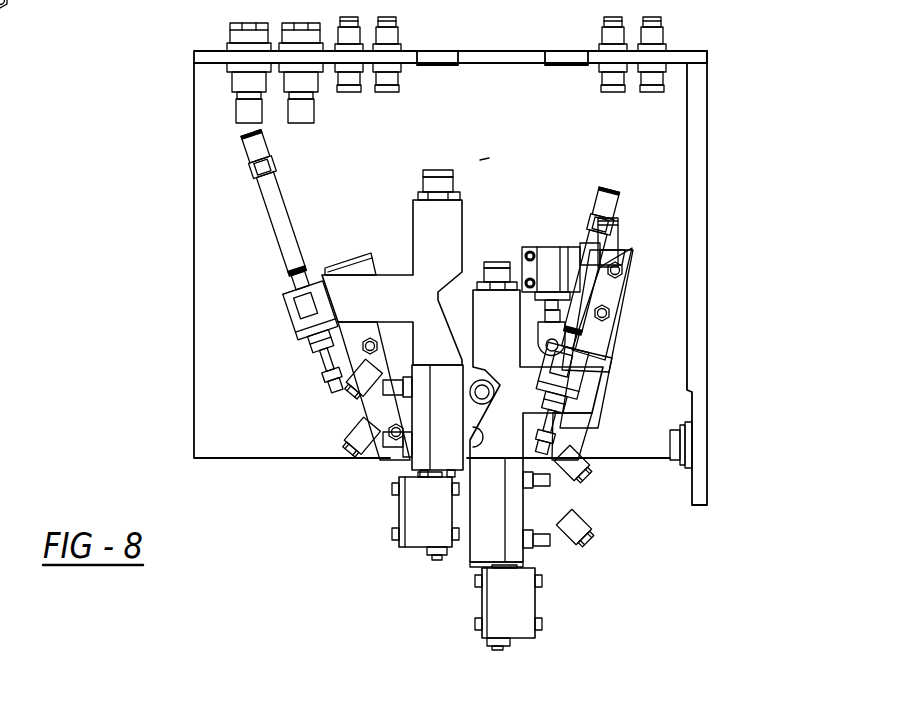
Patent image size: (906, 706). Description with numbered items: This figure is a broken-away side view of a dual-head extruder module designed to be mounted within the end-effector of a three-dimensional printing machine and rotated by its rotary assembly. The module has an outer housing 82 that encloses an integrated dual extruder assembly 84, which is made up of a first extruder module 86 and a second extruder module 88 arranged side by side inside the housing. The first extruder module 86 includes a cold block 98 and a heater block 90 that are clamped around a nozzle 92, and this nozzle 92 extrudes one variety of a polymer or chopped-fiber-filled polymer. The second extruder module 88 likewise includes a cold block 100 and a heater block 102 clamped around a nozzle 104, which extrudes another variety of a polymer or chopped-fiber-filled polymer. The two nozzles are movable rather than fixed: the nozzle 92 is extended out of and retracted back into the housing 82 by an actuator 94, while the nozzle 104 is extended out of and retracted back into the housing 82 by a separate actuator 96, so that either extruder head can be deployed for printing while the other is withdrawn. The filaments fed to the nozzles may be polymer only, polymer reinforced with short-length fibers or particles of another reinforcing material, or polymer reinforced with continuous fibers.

The outer housing 82 is at (193, 176).
The integrated dual extruder assembly 84 is at (489, 158).
The first extruder module 86 is at (262, 321).
The second extruder module 88 is at (678, 303).
The heater block 90 is at (422, 507).
The nozzle 92 is at (440, 555).
The actuator 94 is at (278, 207).
The actuator 96 is at (662, 200).
The cold block 98 is at (422, 447).
The cold block 100 is at (488, 545).
The heater block 102 is at (517, 607).
The nozzle 104 is at (497, 650).